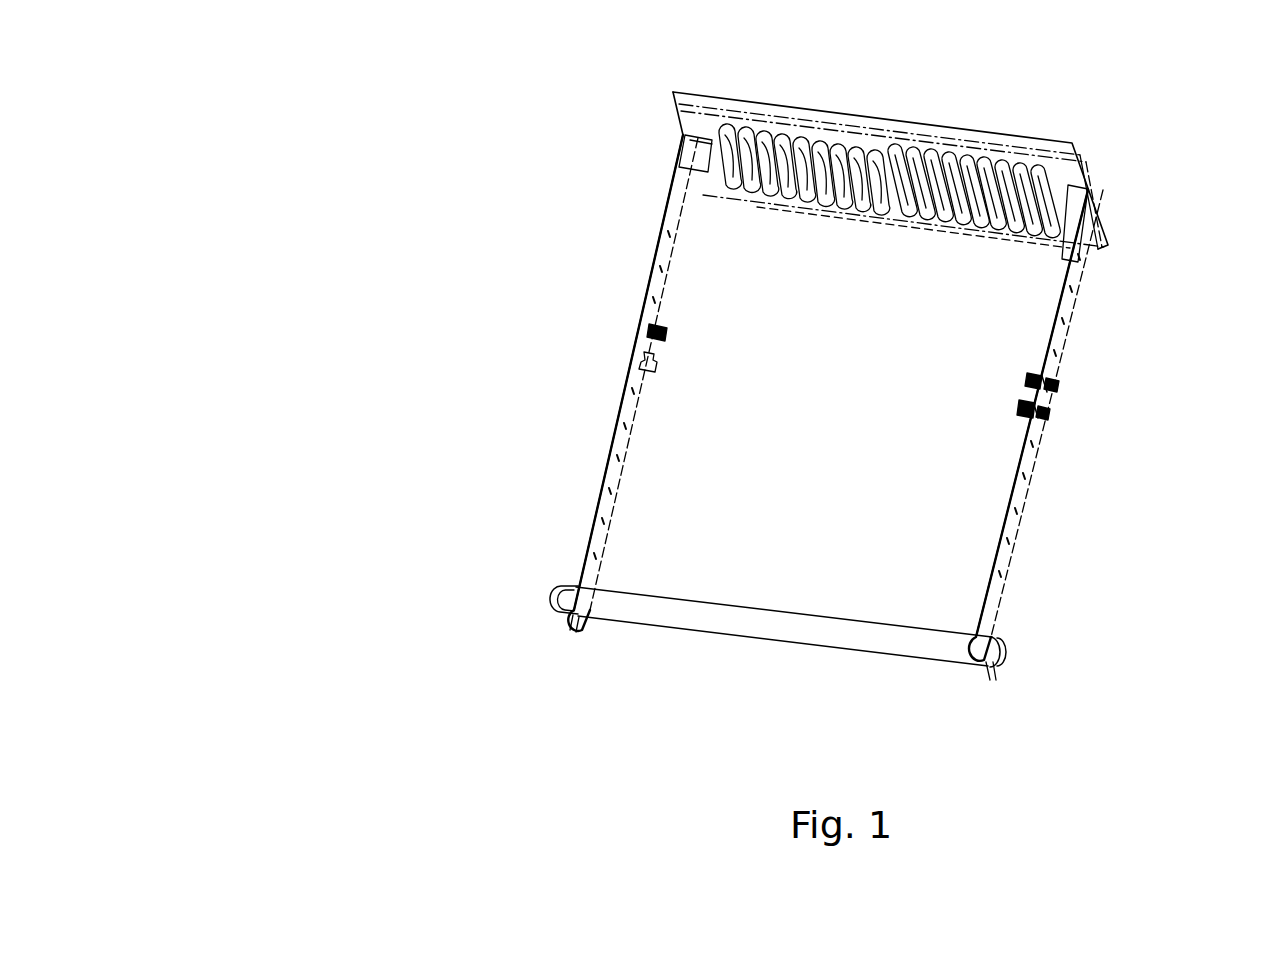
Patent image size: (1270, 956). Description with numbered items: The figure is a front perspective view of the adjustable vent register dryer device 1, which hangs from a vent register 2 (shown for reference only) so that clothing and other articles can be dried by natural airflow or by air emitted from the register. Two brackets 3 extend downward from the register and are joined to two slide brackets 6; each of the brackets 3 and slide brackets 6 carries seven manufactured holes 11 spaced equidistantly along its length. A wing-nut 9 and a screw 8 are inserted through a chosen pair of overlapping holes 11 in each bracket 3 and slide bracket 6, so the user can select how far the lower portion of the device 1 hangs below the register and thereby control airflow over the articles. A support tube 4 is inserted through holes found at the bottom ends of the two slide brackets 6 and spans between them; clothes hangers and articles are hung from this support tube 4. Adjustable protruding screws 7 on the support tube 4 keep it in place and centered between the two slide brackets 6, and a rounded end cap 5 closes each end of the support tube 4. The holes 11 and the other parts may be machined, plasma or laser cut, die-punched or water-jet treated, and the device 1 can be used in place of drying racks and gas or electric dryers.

The device 1 is at (505, 175).
The vent register 2 is at (898, 112).
The bracket 3 is at (630, 253).
The support tube 4 is at (722, 656).
The rounded end cap 5 is at (553, 600).
The slide bracket 6 is at (580, 461).
The protruding screw 7 is at (572, 620).
The screw 8 is at (1054, 416).
The wing-nut 9 is at (675, 332).
The hole 11 is at (676, 200).